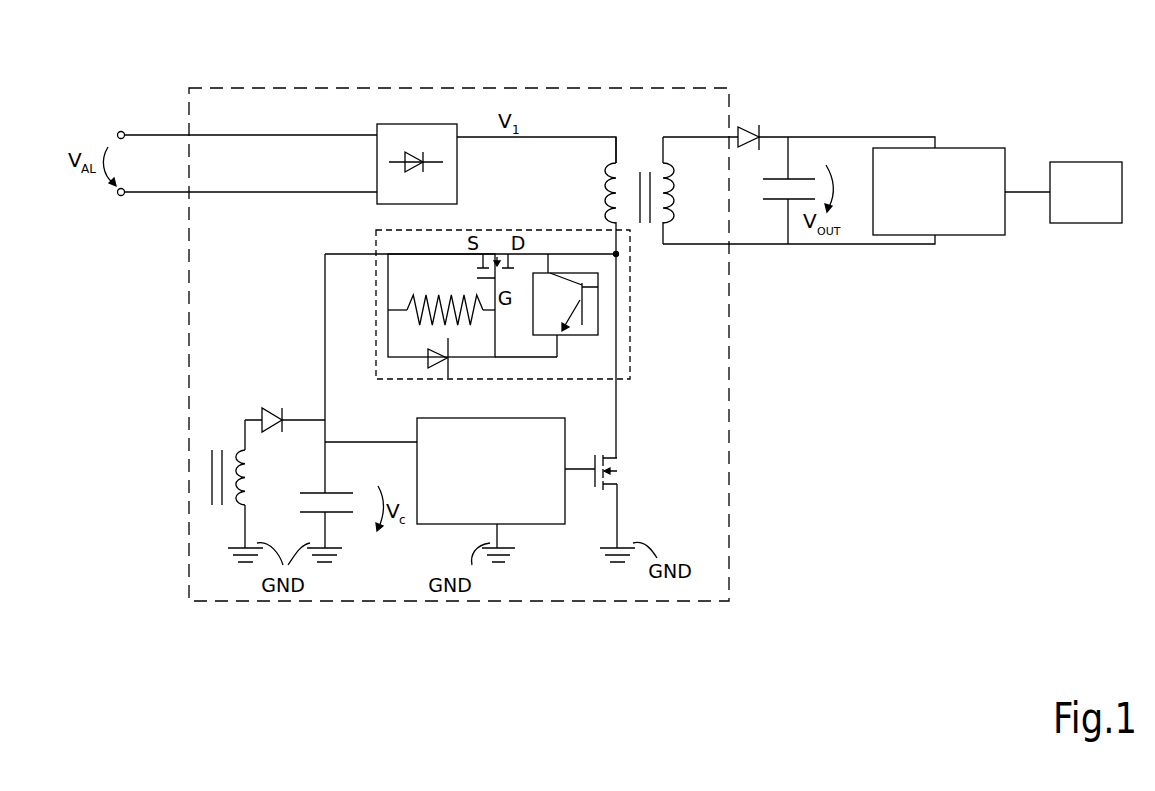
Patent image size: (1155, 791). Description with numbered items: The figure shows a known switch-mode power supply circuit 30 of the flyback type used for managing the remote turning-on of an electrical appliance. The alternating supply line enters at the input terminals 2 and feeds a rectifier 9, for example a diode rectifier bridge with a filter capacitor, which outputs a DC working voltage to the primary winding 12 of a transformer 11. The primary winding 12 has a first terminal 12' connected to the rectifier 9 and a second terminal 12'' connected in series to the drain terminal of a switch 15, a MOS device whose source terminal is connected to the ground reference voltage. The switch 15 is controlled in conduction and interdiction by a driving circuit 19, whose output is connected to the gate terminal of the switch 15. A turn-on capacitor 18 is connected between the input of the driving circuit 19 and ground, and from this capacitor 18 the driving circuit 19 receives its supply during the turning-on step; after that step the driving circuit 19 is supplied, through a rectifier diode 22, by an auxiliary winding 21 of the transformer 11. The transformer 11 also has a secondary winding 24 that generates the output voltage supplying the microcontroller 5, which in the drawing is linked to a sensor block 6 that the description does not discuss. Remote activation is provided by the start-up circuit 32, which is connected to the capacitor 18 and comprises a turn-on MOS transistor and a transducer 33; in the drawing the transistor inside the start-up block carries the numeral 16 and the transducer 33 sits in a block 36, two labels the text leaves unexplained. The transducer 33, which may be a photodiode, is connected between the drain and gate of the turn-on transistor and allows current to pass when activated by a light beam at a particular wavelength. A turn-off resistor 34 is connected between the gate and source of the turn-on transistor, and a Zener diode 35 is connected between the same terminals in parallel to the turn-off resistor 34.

The input terminals (mains supply) 2 is at (144, 143).
The microcontroller 5 is at (980, 148).
The sensor 6 is at (1090, 168).
The rectifier 9 is at (405, 124).
The transformer 11 is at (634, 168).
The primary winding 12 is at (580, 191).
The input supply terminal 12' is at (582, 134).
The second terminal 12'' is at (518, 264).
The turn-on transistor 15 is at (613, 462).
The integrated MOSFET / sensing transistor 16 is at (480, 257).
The turn-on capacitor 18 is at (345, 492).
The driving circuit 19 is at (432, 524).
The auxiliary winding 21 is at (258, 443).
The rectifier diode 22 is at (270, 408).
The secondary winding 24 is at (683, 197).
The power supply circuit 30 is at (660, 88).
The start-up circuit 32 is at (629, 337).
The transducer 33 is at (596, 330).
The turn-off resistor 34 is at (442, 315).
The Zener diode 35 is at (448, 378).
The comparator 36 is at (598, 287).